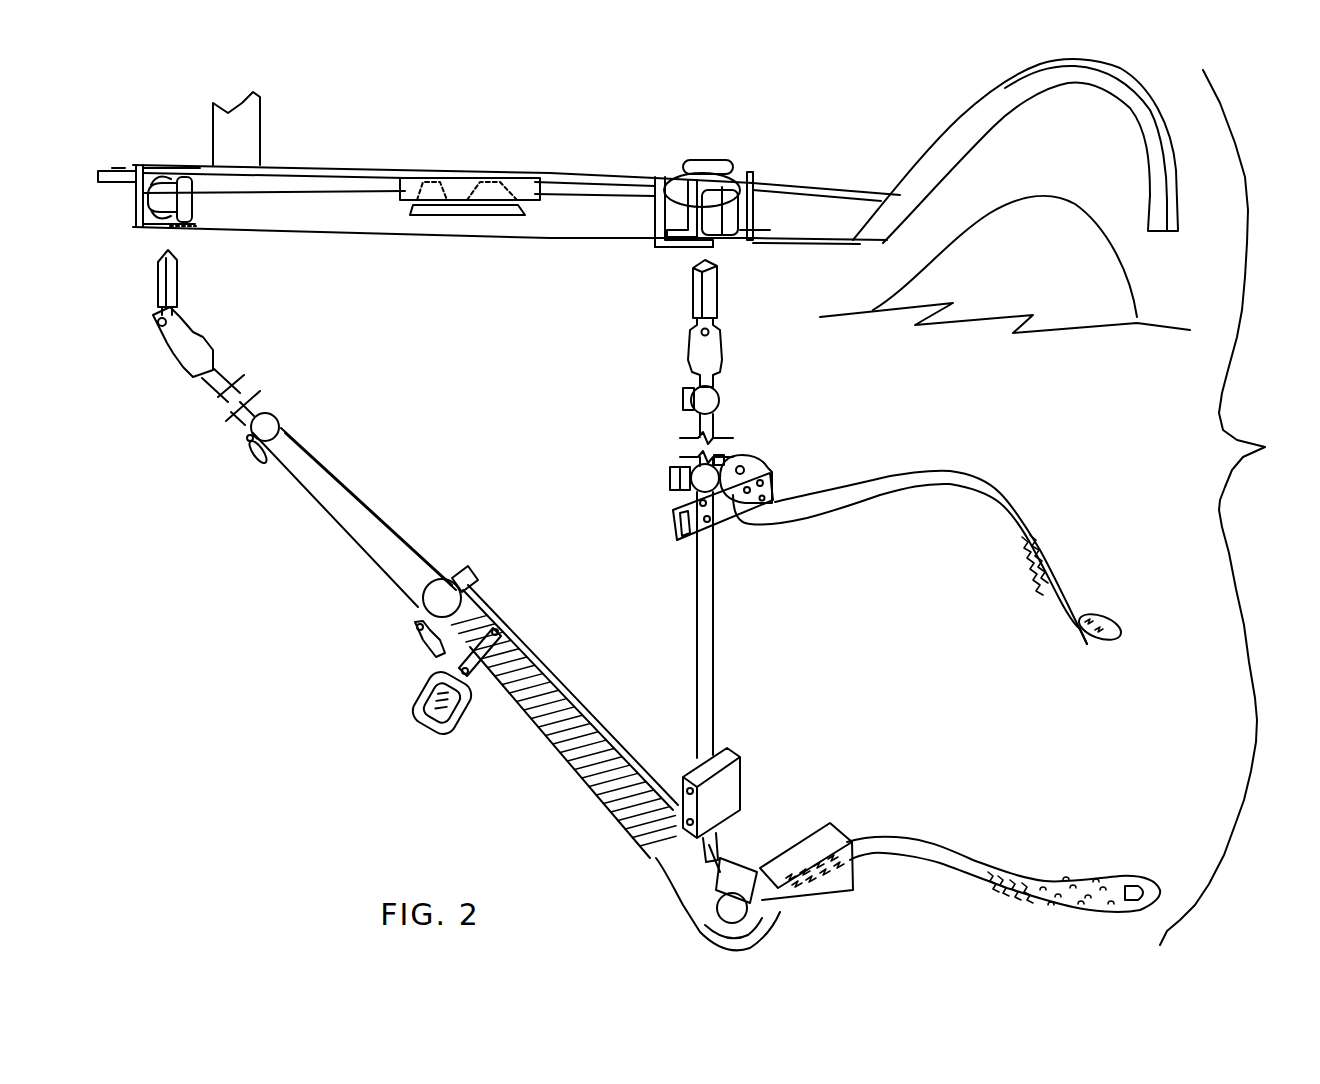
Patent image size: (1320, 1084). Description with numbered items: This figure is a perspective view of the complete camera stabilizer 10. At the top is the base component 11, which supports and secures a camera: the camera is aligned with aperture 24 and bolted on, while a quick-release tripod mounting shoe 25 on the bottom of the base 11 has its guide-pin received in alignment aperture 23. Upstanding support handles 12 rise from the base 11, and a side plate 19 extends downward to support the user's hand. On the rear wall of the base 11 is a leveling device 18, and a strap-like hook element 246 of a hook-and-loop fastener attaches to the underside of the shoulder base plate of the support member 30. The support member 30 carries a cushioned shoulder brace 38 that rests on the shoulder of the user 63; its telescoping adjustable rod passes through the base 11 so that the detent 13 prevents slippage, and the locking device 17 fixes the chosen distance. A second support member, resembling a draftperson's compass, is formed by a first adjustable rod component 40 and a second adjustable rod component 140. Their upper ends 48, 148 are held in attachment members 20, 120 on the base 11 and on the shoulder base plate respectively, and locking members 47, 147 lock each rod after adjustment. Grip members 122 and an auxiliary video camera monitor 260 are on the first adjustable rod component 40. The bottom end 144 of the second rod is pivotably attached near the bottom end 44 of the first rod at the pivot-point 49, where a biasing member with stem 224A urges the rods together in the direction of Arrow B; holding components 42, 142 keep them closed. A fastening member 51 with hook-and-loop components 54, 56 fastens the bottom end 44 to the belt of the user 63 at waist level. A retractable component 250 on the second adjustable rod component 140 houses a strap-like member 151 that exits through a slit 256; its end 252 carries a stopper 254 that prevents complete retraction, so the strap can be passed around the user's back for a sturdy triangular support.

The camera stabilizer 10 is at (1231, 507).
The base component 11 is at (162, 165).
The upstanding support handles 12 is at (264, 141).
The bias member or detent 13 is at (112, 160).
The locking device 17 is at (713, 153).
The leveling device 18 is at (665, 176).
The side plate 19 is at (505, 242).
The attachment member 20 is at (197, 212).
The alignment aperture 23 is at (420, 176).
The aperture 24 is at (510, 178).
The tripod mounting shoe 25 is at (423, 218).
The support member 30 is at (941, 126).
The shoulder brace 38 is at (1156, 235).
The first adjustable rod component 40 is at (545, 767).
The holding component 42 is at (472, 592).
The bottom end 44 is at (788, 835).
The locking member 47 is at (281, 417).
The upper end 48 is at (180, 276).
The pivot-point 49 is at (699, 937).
The fastening member 51 is at (969, 847).
The hook-and-loop fastening component 54 is at (1088, 611).
The hook-and-loop fastening component 56 is at (1038, 534).
The user 63 is at (1068, 272).
The attachment member 120 is at (730, 230).
The grip members 122 is at (603, 790).
The second adjustable rod component 140 is at (719, 612).
The holding component 142 is at (666, 477).
The bottom end 144 is at (724, 838).
The locking member 147 is at (721, 398).
The upper end 148 is at (720, 294).
The strap-like member 151 is at (904, 470).
The stem 224A is at (702, 784).
The hook element 246 is at (663, 252).
The retractable component 250 is at (776, 480).
The end 252 is at (1114, 615).
The stopper 254 is at (1081, 644).
The slit 256 is at (736, 513).
The auxiliary video camera monitor 260 is at (407, 702).
The Arrow B is at (688, 661).